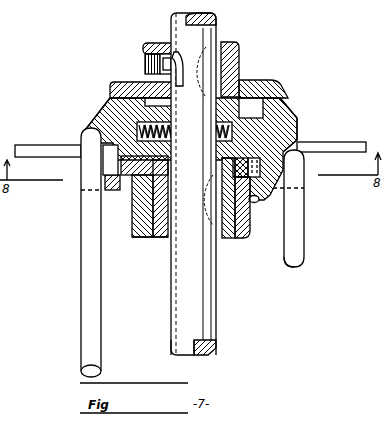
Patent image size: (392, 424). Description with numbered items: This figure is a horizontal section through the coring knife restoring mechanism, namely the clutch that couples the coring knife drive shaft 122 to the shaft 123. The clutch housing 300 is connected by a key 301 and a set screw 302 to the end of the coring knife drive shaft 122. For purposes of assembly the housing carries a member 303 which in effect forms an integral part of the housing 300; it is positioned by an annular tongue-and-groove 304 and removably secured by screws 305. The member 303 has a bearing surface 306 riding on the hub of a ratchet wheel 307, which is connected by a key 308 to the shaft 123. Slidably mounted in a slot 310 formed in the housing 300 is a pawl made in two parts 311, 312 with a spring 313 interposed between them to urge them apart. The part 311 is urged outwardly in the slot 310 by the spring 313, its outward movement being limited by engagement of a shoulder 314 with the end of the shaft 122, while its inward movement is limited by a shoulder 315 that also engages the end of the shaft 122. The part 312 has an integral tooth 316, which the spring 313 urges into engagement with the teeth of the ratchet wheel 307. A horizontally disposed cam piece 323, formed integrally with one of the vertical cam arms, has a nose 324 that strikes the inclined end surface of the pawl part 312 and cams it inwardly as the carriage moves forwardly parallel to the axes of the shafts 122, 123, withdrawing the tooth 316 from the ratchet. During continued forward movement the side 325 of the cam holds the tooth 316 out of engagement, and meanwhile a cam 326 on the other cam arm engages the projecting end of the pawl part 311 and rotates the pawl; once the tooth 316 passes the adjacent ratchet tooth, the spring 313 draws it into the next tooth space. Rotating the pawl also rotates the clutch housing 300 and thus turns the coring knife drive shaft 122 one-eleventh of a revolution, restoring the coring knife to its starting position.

The coring knife drive shaft 122 is at (215, 32).
The shaft 123 is at (218, 325).
The clutch housing 300 is at (268, 88).
The key 301 is at (241, 44).
The set screw 302 is at (147, 58).
The member 303 is at (248, 216).
The annular tongue-and-groove 304 is at (256, 202).
The screws 305 is at (140, 215).
The bearing surface 306 is at (148, 232).
The ratchet wheel 307 is at (166, 238).
The key 308 is at (223, 240).
The slot 310 is at (259, 108).
The pawl part 311 is at (107, 95).
The pawl part 312 is at (300, 128).
The spring 313 is at (110, 113).
The shoulder 314 is at (241, 82).
The shoulder 315 is at (150, 78).
The tooth 316 is at (128, 205).
The cam piece 323 is at (303, 213).
The nose 324 is at (298, 154).
The side 325 is at (282, 250).
The cam 326 is at (88, 247).